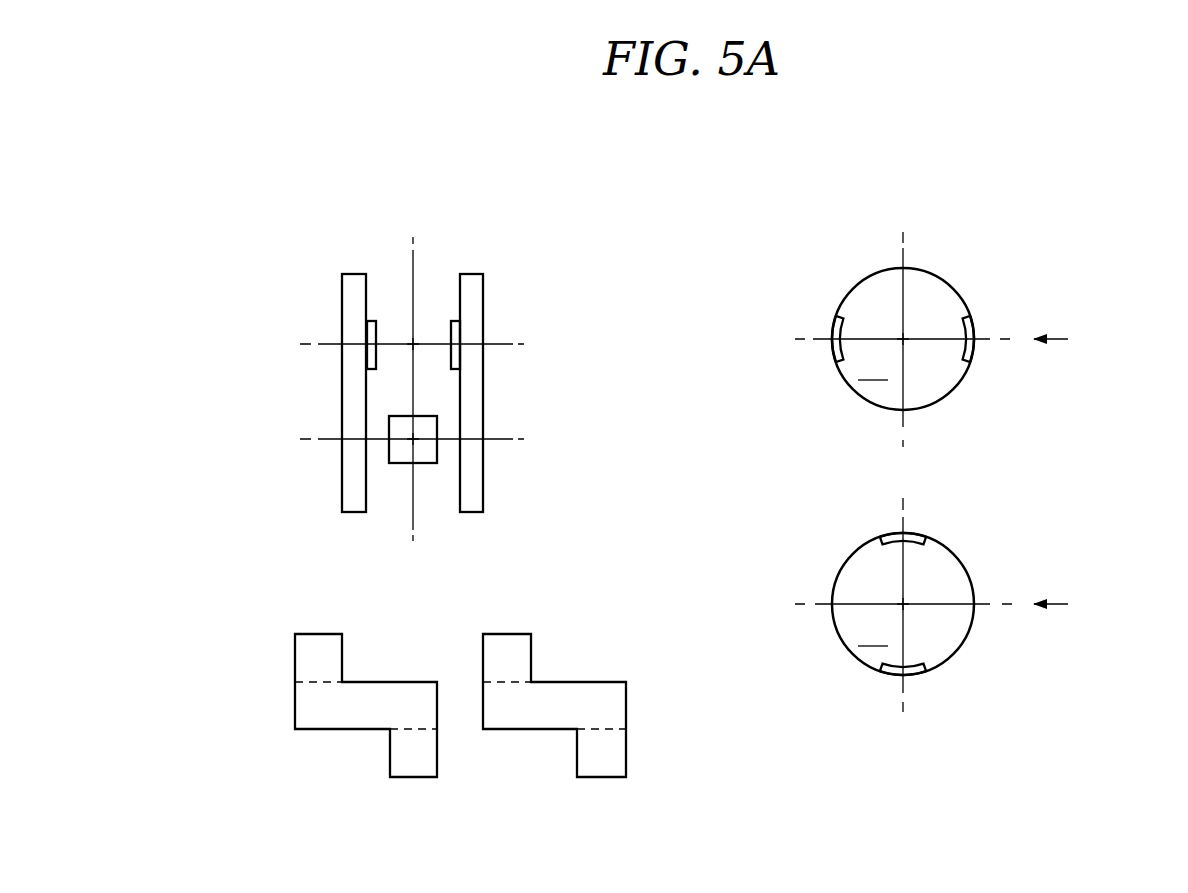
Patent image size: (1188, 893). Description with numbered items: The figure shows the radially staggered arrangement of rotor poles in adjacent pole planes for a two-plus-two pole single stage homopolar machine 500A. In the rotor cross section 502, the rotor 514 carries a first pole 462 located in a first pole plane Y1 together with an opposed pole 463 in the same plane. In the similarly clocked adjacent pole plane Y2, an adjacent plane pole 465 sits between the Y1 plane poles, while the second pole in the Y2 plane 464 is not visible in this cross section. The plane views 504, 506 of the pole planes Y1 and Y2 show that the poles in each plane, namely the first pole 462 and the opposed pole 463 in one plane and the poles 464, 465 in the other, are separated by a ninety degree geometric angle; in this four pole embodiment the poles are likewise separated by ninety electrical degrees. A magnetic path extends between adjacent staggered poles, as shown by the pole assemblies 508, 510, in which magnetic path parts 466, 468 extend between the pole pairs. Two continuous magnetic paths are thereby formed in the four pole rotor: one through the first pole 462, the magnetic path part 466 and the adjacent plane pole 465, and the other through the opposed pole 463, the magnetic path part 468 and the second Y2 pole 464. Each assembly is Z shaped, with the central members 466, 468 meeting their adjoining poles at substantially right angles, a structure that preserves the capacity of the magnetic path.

The 2+2 pole single stage homopolar machine 500A is at (494, 190).
The rotor cross section 502 is at (322, 378).
The plane view of pole plane Y1 504 is at (854, 270).
The plane view of pole plane Y2 506 is at (963, 536).
The pole assembly 508 is at (276, 666).
The pole assembly 510 is at (638, 666).
The rotor 514 is at (473, 483).
The first pole 462 is at (375, 330).
The opposed pole 463 is at (450, 330).
The second pole in the Y2 plane 464 is at (914, 665).
The adjacent plane pole 465 is at (397, 453).
The magnetic path part 466 is at (393, 697).
The magnetic path part 468 is at (582, 697).